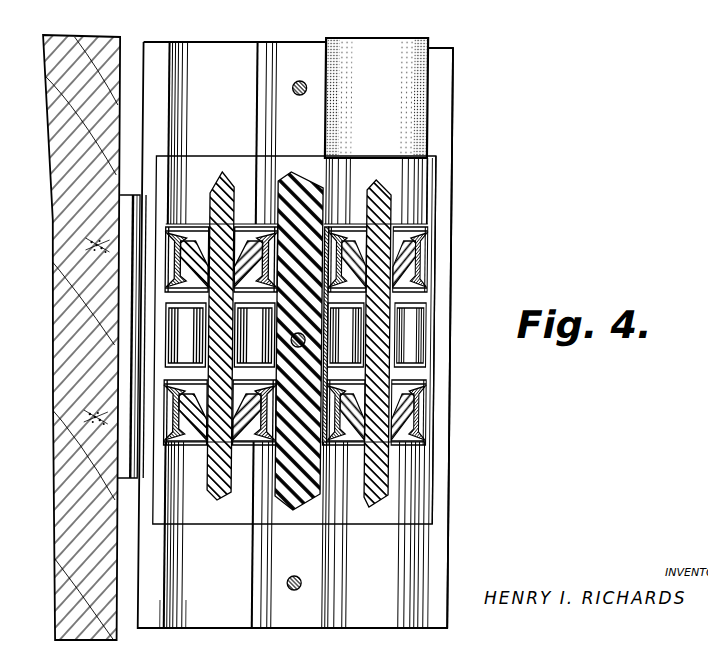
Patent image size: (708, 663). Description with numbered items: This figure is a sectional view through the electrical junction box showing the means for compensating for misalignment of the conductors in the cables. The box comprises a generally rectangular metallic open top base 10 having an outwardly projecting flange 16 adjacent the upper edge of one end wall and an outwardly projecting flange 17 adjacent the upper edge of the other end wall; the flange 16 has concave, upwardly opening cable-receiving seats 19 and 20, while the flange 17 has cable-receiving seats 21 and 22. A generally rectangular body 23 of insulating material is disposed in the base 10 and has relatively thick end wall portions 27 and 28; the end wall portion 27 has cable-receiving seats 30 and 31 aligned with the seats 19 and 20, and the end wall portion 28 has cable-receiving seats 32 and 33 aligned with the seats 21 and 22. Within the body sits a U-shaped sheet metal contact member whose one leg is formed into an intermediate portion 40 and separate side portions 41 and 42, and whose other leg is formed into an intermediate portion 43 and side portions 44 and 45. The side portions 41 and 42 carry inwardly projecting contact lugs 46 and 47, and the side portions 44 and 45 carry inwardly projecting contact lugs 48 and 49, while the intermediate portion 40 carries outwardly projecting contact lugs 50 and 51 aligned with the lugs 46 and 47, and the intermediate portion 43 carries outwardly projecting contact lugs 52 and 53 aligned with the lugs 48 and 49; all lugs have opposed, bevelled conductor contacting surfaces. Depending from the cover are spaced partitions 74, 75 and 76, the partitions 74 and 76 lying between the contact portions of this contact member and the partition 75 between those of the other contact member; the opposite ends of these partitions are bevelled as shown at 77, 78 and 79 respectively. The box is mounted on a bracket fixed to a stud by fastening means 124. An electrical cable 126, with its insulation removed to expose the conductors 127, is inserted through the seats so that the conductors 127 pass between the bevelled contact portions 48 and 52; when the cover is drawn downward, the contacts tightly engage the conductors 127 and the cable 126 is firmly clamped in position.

The base 10 is at (458, 547).
The flange 16 is at (446, 100).
The flange 17 is at (456, 585).
The cable-receiving seat 19 is at (178, 50).
The cable-receiving seat 20 is at (431, 62).
The cable-receiving seat 21 is at (191, 618).
The cable-receiving seat 22 is at (341, 628).
The body 23 is at (437, 462).
The end wall portion 27 is at (437, 190).
The end wall portion 28 is at (437, 510).
The cable-receiving seat 30 is at (178, 174).
The cable-receiving seat 31 is at (424, 206).
The cable-receiving seat 32 is at (207, 510).
The cable-receiving seat 33 is at (408, 513).
The intermediate portion 40 is at (171, 327).
The side portion 41 is at (179, 268).
The side portion 42 is at (184, 410).
The intermediate portion 43 is at (428, 353).
The side portion 44 is at (431, 275).
The side portion 45 is at (425, 412).
The contact lug 46 is at (174, 237).
The contact lug 47 is at (185, 433).
The contact lug 48 is at (427, 243).
The contact lug 49 is at (428, 390).
The contact lug 50 is at (199, 247).
The contact lug 51 is at (201, 418).
The contact lug 52 is at (407, 257).
The contact lug 53 is at (399, 438).
The partition 74 is at (240, 445).
The partition 75 is at (323, 476).
The partition 76 is at (343, 452).
The bevelled ends 77 is at (239, 168).
The bevelled ends 78 is at (287, 174).
The bevelled ends 79 is at (386, 178).
The fastening means 124 is at (97, 246).
The electrical cable 126 is at (365, 58).
The conductors 127 is at (412, 179).